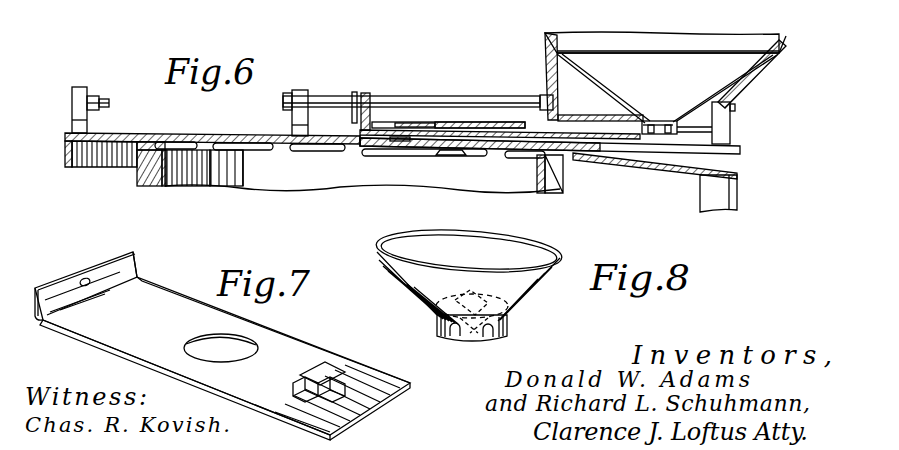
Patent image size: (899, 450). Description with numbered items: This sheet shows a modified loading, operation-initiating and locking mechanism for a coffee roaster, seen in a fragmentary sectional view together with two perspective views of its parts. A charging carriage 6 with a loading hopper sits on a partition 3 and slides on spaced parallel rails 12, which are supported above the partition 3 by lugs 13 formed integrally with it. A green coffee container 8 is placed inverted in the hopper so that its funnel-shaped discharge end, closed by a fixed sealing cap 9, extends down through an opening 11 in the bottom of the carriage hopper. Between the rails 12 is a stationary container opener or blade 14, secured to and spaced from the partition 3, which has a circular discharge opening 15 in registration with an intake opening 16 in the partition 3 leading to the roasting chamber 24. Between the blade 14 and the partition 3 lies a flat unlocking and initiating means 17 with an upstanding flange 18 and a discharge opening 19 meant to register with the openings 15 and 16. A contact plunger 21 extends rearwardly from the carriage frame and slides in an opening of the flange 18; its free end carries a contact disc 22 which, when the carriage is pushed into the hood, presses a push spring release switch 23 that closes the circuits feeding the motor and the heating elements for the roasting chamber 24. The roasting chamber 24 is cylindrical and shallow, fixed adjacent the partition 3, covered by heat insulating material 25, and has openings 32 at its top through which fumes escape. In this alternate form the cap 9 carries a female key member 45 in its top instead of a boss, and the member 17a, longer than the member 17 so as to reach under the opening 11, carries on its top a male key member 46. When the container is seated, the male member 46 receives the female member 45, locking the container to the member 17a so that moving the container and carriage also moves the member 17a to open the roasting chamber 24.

In FIG. 6, the partition 3 is at (71, 132).
In FIG. 6, the charging carriage 6 is at (793, 44).
In FIG. 6, the green coffee container 8 is at (648, 46).
In FIG. 8, the green coffee container 8 is at (527, 292).
In FIG. 6, the sealing cap 9 is at (678, 129).
In FIG. 8, the sealing cap 9 is at (509, 320).
In FIG. 6, the opening 11 is at (634, 126).
In FIG. 6, the rails 12 is at (328, 96).
In FIG. 6, the lugs 13 is at (291, 118).
In FIG. 6, the container opener blade 14 is at (515, 128).
In FIG. 6, the discharge opening 15 is at (428, 122).
In FIG. 6, the intake opening 16 is at (405, 148).
In FIG. 6, the unlocking and operating initiating means 17 is at (352, 153).
In FIG. 6, the unlocking and initiating member 17a is at (738, 156).
In FIG. 7, the unlocking and initiating member 17a is at (375, 405).
In FIG. 6, the upstanding flange 18 is at (368, 94).
In FIG. 7, the upstanding flange 18 is at (100, 272).
In FIG. 7, the discharge opening 19 is at (247, 343).
In FIG. 6, the contact plunger 21 is at (415, 107).
In FIG. 6, the contact disc 22 is at (355, 92).
In FIG. 6, the push spring release switch 23 is at (110, 103).
In FIG. 6, the roasting chamber 24 is at (305, 170).
In FIG. 6, the heat insulating material 25 is at (137, 176).
In FIG. 6, the openings 32 is at (192, 145).
In FIG. 6, the female key member 45 is at (664, 135).
In FIG. 8, the female key member 45 is at (484, 335).
In FIG. 7, the male key member 46 is at (340, 367).